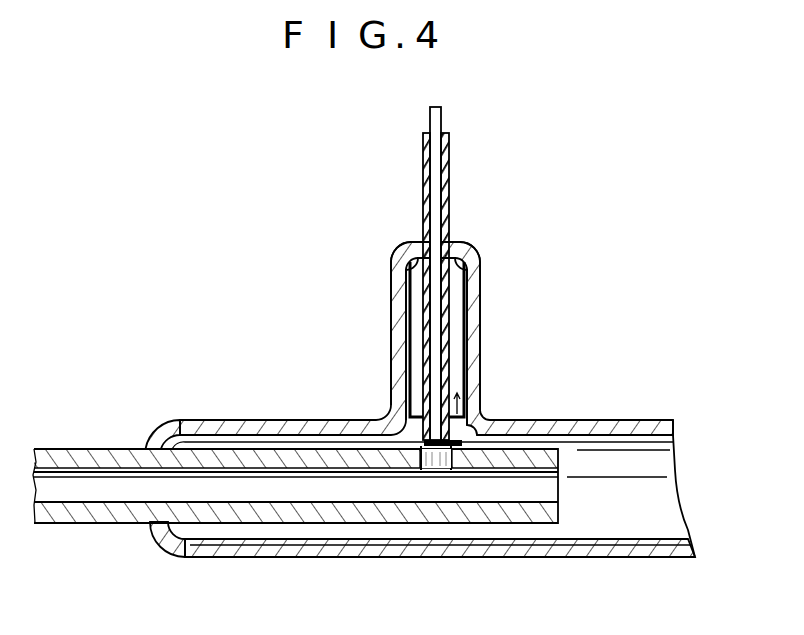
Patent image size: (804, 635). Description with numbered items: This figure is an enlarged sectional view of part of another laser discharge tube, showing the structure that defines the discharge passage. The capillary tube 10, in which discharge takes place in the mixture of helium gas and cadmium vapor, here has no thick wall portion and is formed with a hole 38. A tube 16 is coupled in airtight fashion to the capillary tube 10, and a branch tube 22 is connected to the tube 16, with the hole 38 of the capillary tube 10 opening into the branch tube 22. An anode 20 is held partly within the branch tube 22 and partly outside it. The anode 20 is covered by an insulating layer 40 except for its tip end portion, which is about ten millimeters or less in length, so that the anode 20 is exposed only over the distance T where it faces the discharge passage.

The capillary tube 10 is at (76, 523).
The tube 16 is at (592, 420).
The anode 20 is at (440, 112).
The branch tube 22 is at (477, 350).
The hole 38 is at (436, 456).
The insulating layer 40 is at (452, 284).
The exposed distance T is at (478, 416).